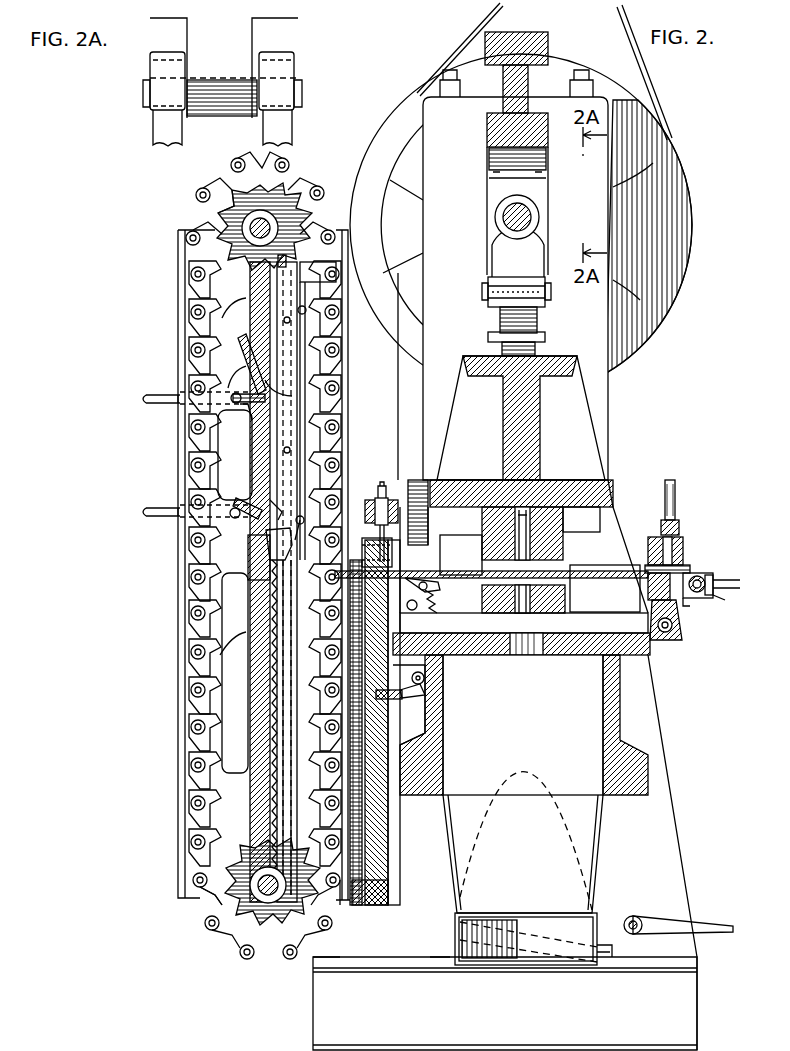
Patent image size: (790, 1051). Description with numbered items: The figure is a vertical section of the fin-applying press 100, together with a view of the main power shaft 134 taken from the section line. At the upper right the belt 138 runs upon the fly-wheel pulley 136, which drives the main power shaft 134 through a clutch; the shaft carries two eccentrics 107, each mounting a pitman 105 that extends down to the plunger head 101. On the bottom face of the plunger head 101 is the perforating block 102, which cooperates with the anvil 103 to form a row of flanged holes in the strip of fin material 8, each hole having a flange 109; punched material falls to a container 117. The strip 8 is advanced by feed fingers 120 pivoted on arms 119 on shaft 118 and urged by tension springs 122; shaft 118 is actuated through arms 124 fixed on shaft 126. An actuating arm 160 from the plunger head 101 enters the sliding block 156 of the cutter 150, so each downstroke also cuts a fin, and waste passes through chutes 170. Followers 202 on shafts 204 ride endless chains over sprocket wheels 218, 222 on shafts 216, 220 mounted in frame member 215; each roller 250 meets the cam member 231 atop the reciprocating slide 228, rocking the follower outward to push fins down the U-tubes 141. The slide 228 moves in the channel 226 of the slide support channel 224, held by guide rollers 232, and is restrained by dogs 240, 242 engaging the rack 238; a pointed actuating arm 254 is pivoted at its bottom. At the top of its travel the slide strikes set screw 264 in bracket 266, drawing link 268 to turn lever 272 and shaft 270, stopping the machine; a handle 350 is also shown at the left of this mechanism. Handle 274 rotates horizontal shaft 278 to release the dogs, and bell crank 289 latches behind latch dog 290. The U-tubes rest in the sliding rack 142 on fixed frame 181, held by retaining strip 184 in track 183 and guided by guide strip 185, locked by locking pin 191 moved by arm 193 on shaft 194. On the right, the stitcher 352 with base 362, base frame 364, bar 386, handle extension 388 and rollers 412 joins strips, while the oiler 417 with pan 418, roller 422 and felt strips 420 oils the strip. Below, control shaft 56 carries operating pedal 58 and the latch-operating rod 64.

In FIG. 2, the strip of fin material 8 is at (718, 578).
In FIG. 2, the control shaft 56 is at (630, 915).
In FIG. 2, the operating pedal 58 is at (720, 925).
In FIG. 2, the latch-operating rod 64 is at (605, 960).
In FIG. 2, the press 100 is at (689, 362).
In FIG. 2, the plunger head 101 is at (474, 360).
In FIG. 2, the block 102 is at (558, 539).
In FIG. 2, the anvil 103 is at (558, 599).
In FIG. 2A, the pitman 105 is at (165, 138).
In FIG. 2, the pitman 105 is at (503, 249).
In FIG. 2A, the eccentric 107 is at (150, 69).
In FIG. 2, the eccentric 107 is at (503, 200).
In FIG. 2, the flange 109 is at (467, 572).
In FIG. 2, the container 117 is at (455, 942).
In FIG. 2, the shaft 118 is at (448, 645).
In FIG. 2, the arm 119 is at (430, 606).
In FIG. 2, the feed finger 120 is at (412, 574).
In FIG. 2, the tension spring 122 is at (437, 590).
In FIG. 2, the arm 124 is at (673, 625).
In FIG. 2, the shaft 126 is at (665, 647).
In FIG. 2A, the main power shaft 134 is at (148, 104).
In FIG. 2, the main power shaft 134 is at (524, 222).
In FIG. 2, the fly-wheel pulley 136 is at (680, 200).
In FIG. 2, the belt 138 is at (618, 30).
In FIG. 2, the U-tube 141 is at (389, 823).
In FIG. 2, the sliding rack 142 is at (343, 703).
In FIG. 2, the cutter 150 is at (374, 490).
In FIG. 2, the sliding block 156 is at (374, 540).
In FIG. 2, the actuating arm 160 is at (419, 482).
In FIG. 2, the chute 170 is at (462, 660).
In FIG. 2, the fixed frame 181 is at (375, 850).
In FIG. 2, the track 183 is at (365, 903).
In FIG. 2, the retaining strip 184 is at (343, 895).
In FIG. 2, the guide strip 185 is at (390, 745).
In FIG. 2, the locking pin 191 is at (395, 700).
In FIG. 2, the arm 193 is at (425, 695).
In FIG. 2, the shaft 194 is at (416, 673).
In FIG. 2, the follower 202 is at (205, 208).
In FIG. 2, the shaft 204 is at (323, 192).
In FIG. 2, the frame member 215 is at (190, 668).
In FIG. 2, the shaft 216 is at (225, 205).
In FIG. 2, the sprocket wheel 218 is at (200, 224).
In FIG. 2, the shaft 220 is at (275, 893).
In FIG. 2, the sprocket wheel 222 is at (225, 930).
In FIG. 2, the slide support channel 224 is at (255, 605).
In FIG. 2, the channel 226 is at (287, 700).
In FIG. 2, the reciprocating slide 228 is at (268, 442).
In FIG. 2, the cam member 231 is at (312, 268).
In FIG. 2, the guide roller 232 is at (292, 320).
In FIG. 2, the rack 238 is at (272, 685).
In FIG. 2, the dog 240 is at (285, 560).
In FIG. 2, the dog 242 is at (266, 533).
In FIG. 2, the roller 250 is at (269, 473).
In FIG. 2, the pointed actuating arm 254 is at (300, 516).
In FIG. 2, the set screw 264 is at (290, 250).
In FIG. 2, the bracket 266 is at (280, 262).
In FIG. 2, the link 268 is at (238, 343).
In FIG. 2, the shaft 270 is at (245, 394).
In FIG. 2, the lever 272 is at (255, 405).
In FIG. 2, the handle 274 is at (178, 508).
In FIG. 2, the horizontal shaft 278 is at (244, 501).
In FIG. 2, the bell crank 289 is at (272, 498).
In FIG. 2, the latch dog 290 is at (260, 460).
In FIG. 2, the handle 350 is at (178, 394).
In FIG. 2, the stitcher 352 is at (693, 534).
In FIG. 2, the base 362 is at (648, 592).
In FIG. 2, the base frame 364 is at (684, 546).
In FIG. 2, the bar 386 is at (661, 527).
In FIG. 2, the handle extension 388 is at (663, 496).
In FIG. 2, the roller 412 is at (651, 567).
In FIG. 2, the oiler 417 is at (726, 598).
In FIG. 2, the pan 418 is at (712, 596).
In FIG. 2, the felt strip 420 is at (703, 578).
In FIG. 2, the roller 422 is at (686, 600).